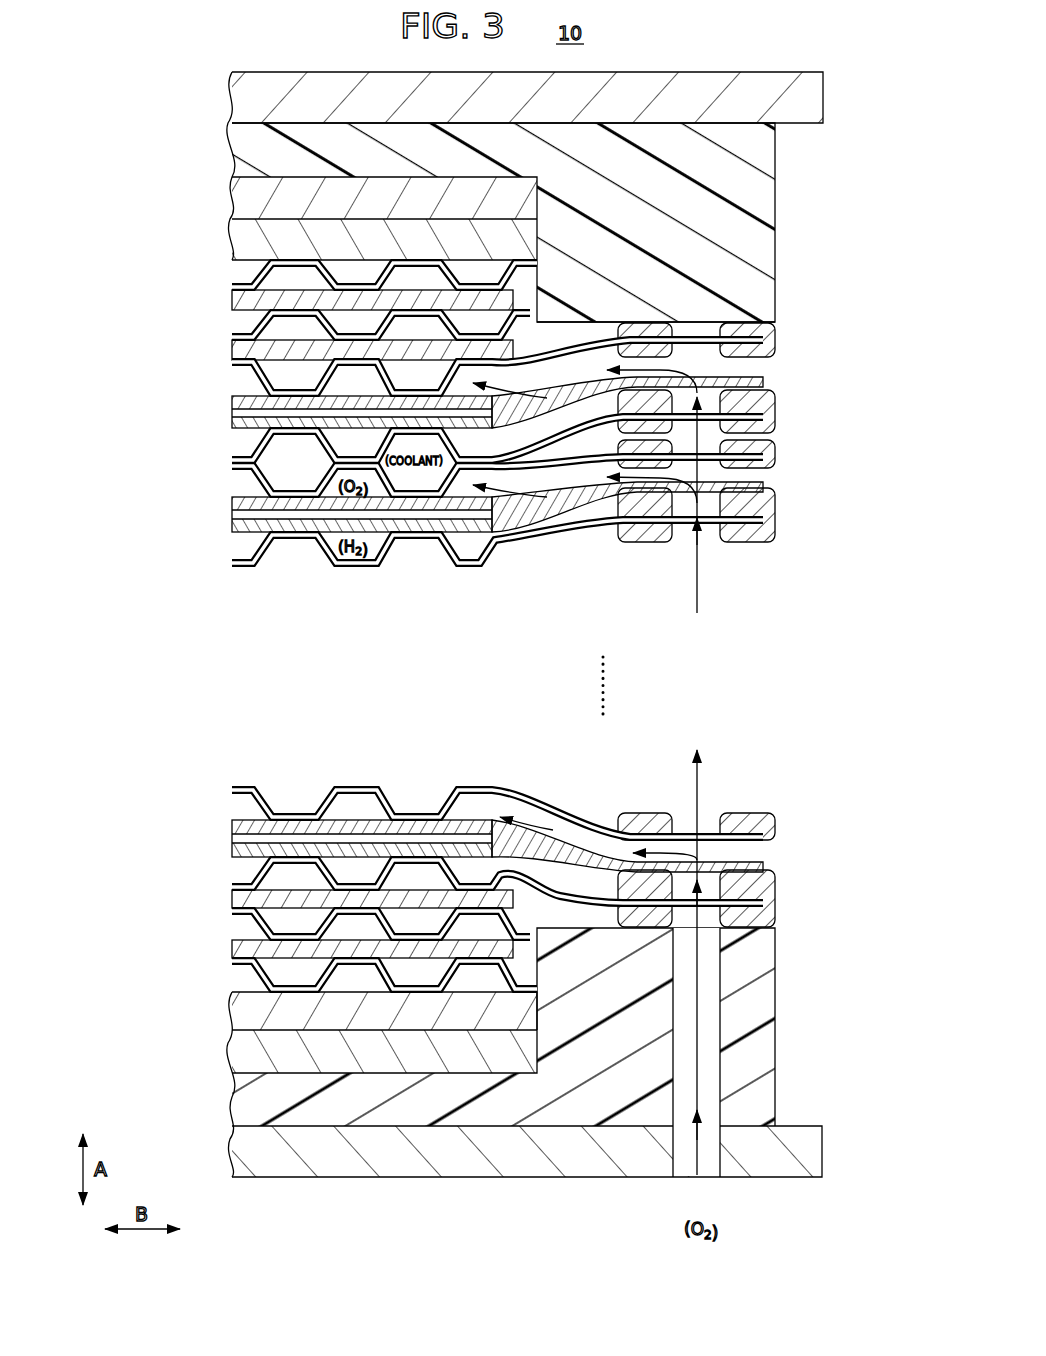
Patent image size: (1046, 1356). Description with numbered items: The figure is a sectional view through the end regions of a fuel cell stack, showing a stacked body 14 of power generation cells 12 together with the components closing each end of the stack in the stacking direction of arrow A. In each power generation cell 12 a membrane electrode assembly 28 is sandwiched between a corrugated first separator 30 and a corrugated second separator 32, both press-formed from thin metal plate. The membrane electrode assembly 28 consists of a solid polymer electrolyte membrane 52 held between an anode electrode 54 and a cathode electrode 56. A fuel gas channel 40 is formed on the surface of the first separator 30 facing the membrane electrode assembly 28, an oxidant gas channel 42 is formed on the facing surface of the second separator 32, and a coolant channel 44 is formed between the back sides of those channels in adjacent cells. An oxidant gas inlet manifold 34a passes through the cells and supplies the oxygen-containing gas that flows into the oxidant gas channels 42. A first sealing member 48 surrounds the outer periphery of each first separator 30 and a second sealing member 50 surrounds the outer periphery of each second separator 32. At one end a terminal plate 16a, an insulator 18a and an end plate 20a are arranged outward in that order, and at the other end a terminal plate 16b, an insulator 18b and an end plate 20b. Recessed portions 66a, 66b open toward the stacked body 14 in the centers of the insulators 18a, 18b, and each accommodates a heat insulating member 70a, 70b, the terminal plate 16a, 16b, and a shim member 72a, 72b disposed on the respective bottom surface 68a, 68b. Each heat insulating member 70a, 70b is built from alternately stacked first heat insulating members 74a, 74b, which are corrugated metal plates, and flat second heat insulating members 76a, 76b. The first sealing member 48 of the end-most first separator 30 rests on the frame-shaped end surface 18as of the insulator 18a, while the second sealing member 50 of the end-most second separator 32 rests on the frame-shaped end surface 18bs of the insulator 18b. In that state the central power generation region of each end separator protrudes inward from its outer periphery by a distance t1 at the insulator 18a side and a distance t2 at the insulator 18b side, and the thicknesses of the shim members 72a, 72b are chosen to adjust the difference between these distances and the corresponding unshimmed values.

The power generation cell 12 is at (140, 375).
The stacked body 14 is at (100, 403).
The terminal plate 16a is at (245, 1012).
The terminal plate 16b is at (245, 232).
The insulator 18a is at (245, 1094).
The insulator 18b is at (237, 135).
The frame-shaped end surface 18as is at (770, 925).
The frame-shaped end surface 18bs is at (800, 318).
The end plate 20a is at (235, 1140).
The end plate 20b is at (230, 90).
The membrane electrode assembly 28 is at (232, 413).
The first separator 30 is at (232, 447).
The second separator 32 is at (172, 819).
The oxidant gas inlet manifold 34a is at (714, 1180).
The fuel gas channel 40 is at (375, 565).
The oxidant gas channel 42 is at (388, 542).
The coolant channel 44 is at (415, 480).
The first sealing member 48 is at (766, 415).
The second sealing member 50 is at (765, 358).
The solid polymer electrolyte membrane 52 is at (292, 512).
The anode electrode 54 is at (340, 527).
The cathode electrode 56 is at (278, 500).
The recessed portion 66a is at (540, 1048).
The recessed portion 66b is at (541, 195).
The bottom surface 68a is at (421, 1074).
The bottom surface 68b is at (421, 184).
The heat insulating member 70a is at (144, 899).
The heat insulating member 70b is at (146, 265).
The shim member 72a is at (245, 1052).
The shim member 72b is at (248, 200).
The first heat insulating member 74a is at (262, 924).
The first heat insulating member 74b is at (262, 272).
The second heat insulating member 76a is at (232, 897).
The second heat insulating member 76b is at (232, 300).
The distance t1 is at (555, 870).
The distance t2 is at (555, 382).